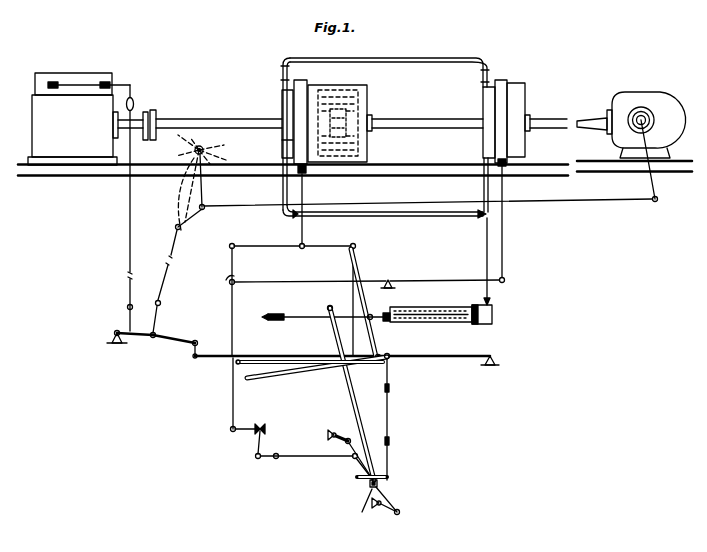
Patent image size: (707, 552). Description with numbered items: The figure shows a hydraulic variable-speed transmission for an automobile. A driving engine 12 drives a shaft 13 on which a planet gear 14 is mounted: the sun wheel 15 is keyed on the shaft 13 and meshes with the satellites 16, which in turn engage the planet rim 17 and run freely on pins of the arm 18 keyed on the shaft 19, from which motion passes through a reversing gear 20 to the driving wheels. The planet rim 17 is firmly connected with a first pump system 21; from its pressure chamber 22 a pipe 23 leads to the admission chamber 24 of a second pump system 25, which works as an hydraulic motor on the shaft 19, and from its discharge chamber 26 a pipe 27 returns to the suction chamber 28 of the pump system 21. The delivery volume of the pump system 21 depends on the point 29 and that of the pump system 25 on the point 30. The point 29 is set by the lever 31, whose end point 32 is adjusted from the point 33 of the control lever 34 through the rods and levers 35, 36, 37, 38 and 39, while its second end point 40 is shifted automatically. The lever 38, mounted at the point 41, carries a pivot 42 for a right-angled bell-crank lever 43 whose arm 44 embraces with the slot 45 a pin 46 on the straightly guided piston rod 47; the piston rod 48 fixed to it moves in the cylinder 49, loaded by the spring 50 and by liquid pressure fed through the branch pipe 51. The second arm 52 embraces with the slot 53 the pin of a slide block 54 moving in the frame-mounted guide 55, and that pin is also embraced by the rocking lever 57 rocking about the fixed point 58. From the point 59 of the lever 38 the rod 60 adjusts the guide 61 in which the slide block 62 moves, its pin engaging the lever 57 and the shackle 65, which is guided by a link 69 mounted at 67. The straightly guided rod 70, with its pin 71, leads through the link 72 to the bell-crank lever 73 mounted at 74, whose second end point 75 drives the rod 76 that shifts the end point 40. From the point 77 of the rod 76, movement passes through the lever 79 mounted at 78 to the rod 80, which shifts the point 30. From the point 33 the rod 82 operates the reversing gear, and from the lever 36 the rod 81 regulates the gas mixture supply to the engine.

The driving engine 12 is at (92, 119).
The shaft 13 is at (218, 121).
The planet gear 14 is at (322, 90).
The sun wheel 15 is at (350, 126).
The satellites 16 is at (357, 148).
The planet rim 17 is at (356, 90).
The arm 18 is at (364, 112).
The shaft 19 is at (412, 120).
The reversing gear 20 is at (622, 140).
The pump system 21 is at (300, 86).
The pressure chamber 22 is at (283, 148).
The pipe 23 is at (430, 218).
The admission chamber 24 is at (486, 143).
The second pump system 25 is at (518, 110).
The discharge chamber 26 is at (484, 100).
The pipe 27 is at (441, 59).
The suction chamber 28 is at (282, 100).
The point 29 is at (305, 245).
The point 30 is at (505, 280).
The lever 31 is at (283, 245).
The end point 32 is at (356, 246).
The point 33 is at (201, 210).
The control lever 34 is at (202, 148).
The rod 35 is at (164, 279).
The lever 36 is at (166, 347).
The rod 37 is at (198, 347).
The lever 38 is at (440, 359).
The rod 39 is at (349, 292).
The second end point 40 is at (235, 245).
The point 41 is at (497, 359).
The pivot 42 is at (376, 356).
The bell-crank lever 43 is at (369, 312).
The arm 44 is at (381, 354).
The slot 45 is at (362, 271).
The pin 46 is at (437, 306).
The piston rod 47 is at (290, 316).
The piston rod 48 is at (475, 325).
The cylinder 49 is at (490, 325).
The spring 50 is at (450, 323).
The branch pipe 51 is at (486, 236).
The second arm 52 is at (286, 373).
The slot 53 is at (322, 365).
The slide block 54 is at (337, 377).
The guide 55 is at (236, 363).
The rocking lever 57 is at (353, 399).
The fixed point 58 is at (368, 508).
The point 59 is at (390, 360).
The rod 60 is at (391, 428).
The guide 61 is at (358, 476).
The slide block 62 is at (369, 486).
The shackle 65 is at (391, 500).
The mounting point 67 is at (382, 507).
The link 69 is at (400, 513).
The rod 70 is at (309, 464).
The pin 71 is at (346, 454).
The link 72 is at (266, 464).
The bell-crank lever 73 is at (257, 442).
The mounting point 74 is at (266, 431).
The second end point 75 is at (231, 433).
The rod 76 is at (232, 396).
The point 77 is at (230, 285).
The mounting point 78 is at (391, 279).
The lever 79 is at (435, 283).
The rod 80 is at (504, 242).
The rod 81 is at (122, 221).
The rod 82 is at (568, 201).